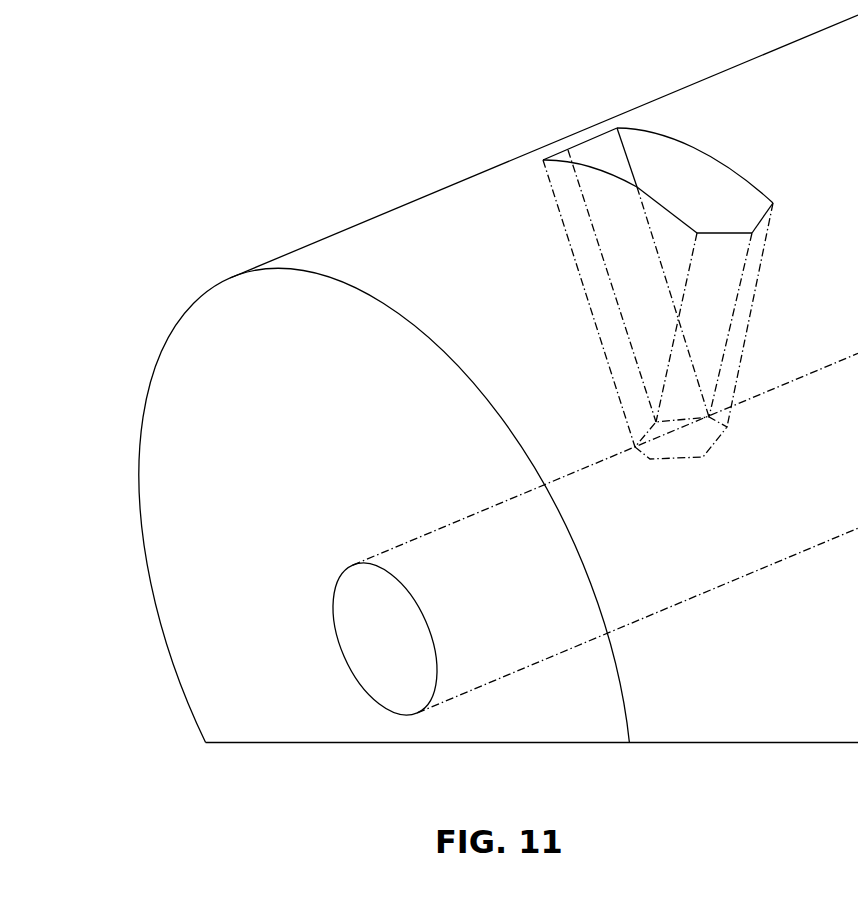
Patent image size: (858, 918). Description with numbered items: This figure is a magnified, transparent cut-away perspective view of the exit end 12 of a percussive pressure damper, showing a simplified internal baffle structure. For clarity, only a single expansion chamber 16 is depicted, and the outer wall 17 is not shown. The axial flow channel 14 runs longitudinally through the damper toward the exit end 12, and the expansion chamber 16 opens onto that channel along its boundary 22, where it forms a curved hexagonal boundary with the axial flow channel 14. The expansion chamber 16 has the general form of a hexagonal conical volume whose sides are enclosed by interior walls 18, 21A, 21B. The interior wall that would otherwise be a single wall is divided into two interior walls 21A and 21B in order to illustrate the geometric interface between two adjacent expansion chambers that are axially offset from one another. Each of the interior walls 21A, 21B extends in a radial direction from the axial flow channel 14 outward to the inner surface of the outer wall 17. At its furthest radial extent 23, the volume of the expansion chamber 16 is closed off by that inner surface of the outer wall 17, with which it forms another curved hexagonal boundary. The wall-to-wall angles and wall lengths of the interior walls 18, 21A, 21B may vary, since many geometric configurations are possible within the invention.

The exit end 12 is at (95, 316).
The axial flow channel 14 is at (389, 638).
The expansion chamber 16 is at (700, 183).
The outer wall 17 is at (377, 233).
The interior wall 18 is at (603, 193).
The interior wall 21A is at (600, 141).
The interior wall 21B is at (557, 153).
The boundary 22 is at (677, 462).
The furthest radial extent 23 is at (660, 128).